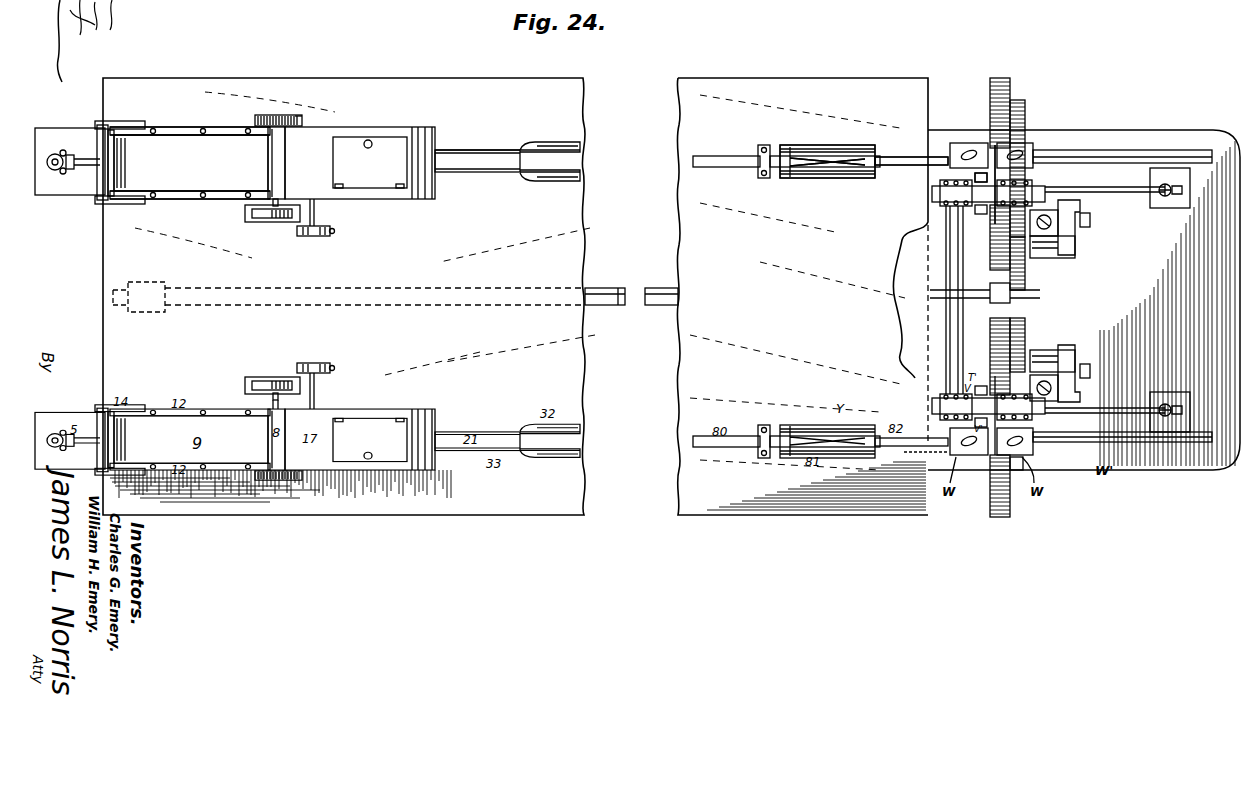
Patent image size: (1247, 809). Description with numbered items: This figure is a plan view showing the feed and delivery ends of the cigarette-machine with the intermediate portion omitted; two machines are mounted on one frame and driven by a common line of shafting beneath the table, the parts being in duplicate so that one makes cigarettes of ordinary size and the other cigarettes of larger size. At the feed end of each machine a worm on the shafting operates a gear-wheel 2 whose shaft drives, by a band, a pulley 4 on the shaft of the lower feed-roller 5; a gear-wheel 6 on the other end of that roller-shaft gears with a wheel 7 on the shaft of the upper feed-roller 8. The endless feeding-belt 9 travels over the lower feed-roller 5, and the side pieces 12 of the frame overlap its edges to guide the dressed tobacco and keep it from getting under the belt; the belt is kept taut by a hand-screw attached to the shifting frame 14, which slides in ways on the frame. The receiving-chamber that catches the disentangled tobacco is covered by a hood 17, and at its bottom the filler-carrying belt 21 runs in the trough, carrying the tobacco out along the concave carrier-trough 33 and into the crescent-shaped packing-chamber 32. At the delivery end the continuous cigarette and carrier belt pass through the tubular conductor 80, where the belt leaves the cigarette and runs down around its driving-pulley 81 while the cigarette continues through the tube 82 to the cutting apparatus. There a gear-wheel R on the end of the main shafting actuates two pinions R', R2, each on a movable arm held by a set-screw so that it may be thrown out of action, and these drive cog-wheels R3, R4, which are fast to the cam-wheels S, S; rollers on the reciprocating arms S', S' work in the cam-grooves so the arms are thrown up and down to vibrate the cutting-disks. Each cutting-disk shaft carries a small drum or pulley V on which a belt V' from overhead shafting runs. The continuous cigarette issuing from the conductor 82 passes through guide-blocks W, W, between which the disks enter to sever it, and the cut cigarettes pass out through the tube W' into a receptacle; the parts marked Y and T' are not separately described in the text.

The gear-wheel 2 is at (265, 222).
The pulley 4 is at (270, 377).
The lower feed-roller 5 is at (63, 160).
The gear-wheel 6 is at (273, 120).
The wheel 7 is at (302, 120).
The upper feed-roller 8 is at (276, 163).
The feeding-belt 9 is at (190, 163).
The side pieces 12 is at (190, 164).
The shifting frame 14 is at (112, 200).
The hood 17 is at (360, 163).
The filler-carrying belt 21 is at (477, 161).
The packing-chamber 32 is at (558, 142).
The carrier-trough 33 is at (491, 150).
The tubular conductor 80 is at (724, 166).
The driving-pulley 81 is at (818, 178).
The tube 82 is at (948, 150).
The gauge Y is at (838, 158).
The cam-wheel S is at (1000, 494).
The reciprocating arm S' is at (1000, 105).
The gear-wheel R is at (985, 293).
The pinion R' is at (1033, 343).
The pinion R2 is at (1026, 262).
The cog-wheel R3 is at (1016, 472).
The cog-wheel R4 is at (1027, 168).
The guide-blocks W is at (991, 156).
The tube W' is at (1122, 148).
The drum or pulley V is at (1061, 184).
The belt V' is at (980, 173).
The lever T' is at (981, 191).